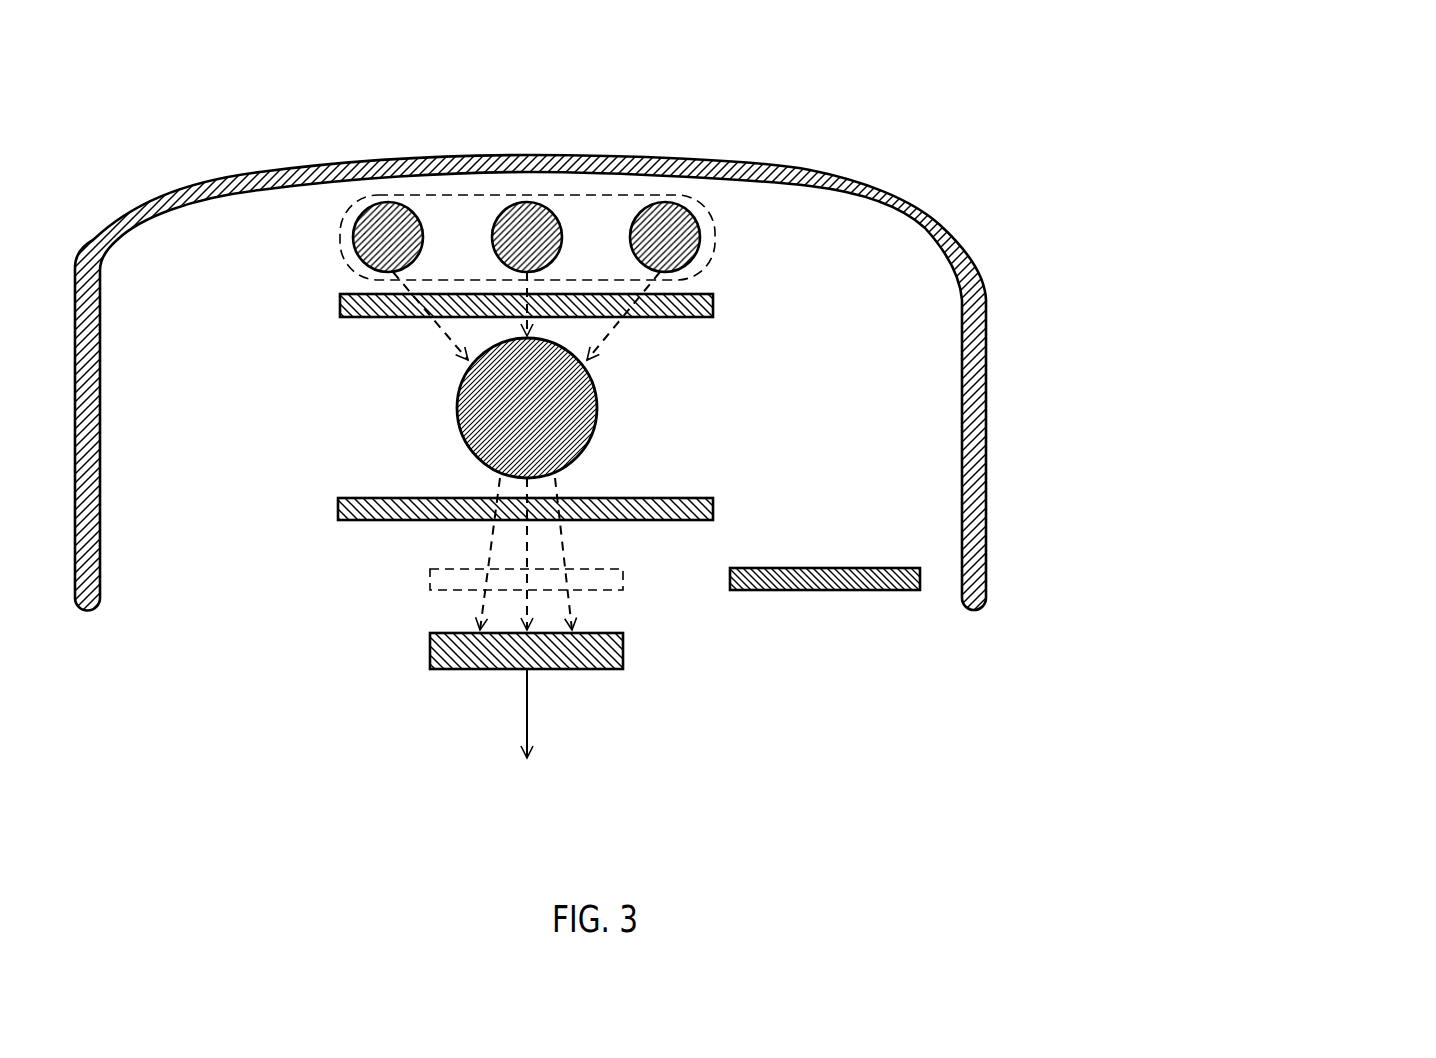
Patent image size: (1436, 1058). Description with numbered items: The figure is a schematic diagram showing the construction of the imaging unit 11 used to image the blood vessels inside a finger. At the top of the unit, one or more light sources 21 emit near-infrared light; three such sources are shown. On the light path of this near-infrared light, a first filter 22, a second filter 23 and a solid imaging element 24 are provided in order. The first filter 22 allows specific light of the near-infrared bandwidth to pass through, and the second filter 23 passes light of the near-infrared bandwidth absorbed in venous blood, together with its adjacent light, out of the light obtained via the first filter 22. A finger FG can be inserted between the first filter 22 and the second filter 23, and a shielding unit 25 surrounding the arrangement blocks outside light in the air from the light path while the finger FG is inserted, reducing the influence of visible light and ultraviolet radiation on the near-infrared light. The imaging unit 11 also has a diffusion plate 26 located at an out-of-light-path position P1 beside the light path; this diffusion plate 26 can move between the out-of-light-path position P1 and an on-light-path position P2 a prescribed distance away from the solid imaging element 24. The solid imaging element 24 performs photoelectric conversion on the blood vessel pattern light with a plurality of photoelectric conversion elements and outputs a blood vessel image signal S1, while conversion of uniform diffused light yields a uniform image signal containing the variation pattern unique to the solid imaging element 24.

The imaging unit 11 is at (742, 407).
The light sources 21 is at (640, 195).
The first filter 22 is at (713, 300).
The second filter 23 is at (713, 505).
The solid imaging element 24 is at (623, 652).
The shielding unit 25 is at (986, 560).
The diffusion plate 26 is at (920, 583).
The finger FG is at (616, 398).
The out-of-light-path position P1 is at (926, 606).
The on-light-path position P2 is at (432, 594).
The blood vessel image signal S1 is at (527, 697).